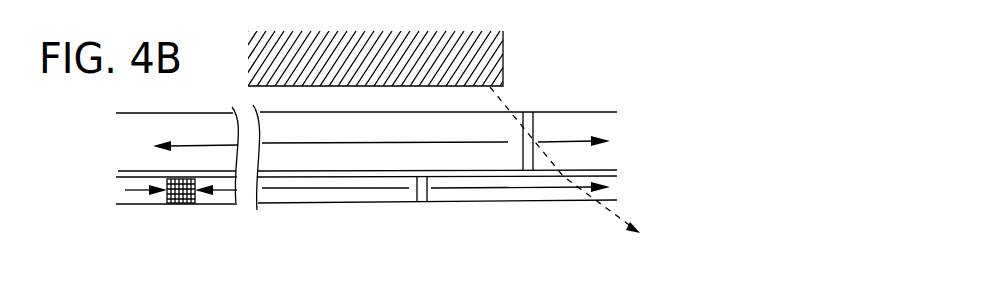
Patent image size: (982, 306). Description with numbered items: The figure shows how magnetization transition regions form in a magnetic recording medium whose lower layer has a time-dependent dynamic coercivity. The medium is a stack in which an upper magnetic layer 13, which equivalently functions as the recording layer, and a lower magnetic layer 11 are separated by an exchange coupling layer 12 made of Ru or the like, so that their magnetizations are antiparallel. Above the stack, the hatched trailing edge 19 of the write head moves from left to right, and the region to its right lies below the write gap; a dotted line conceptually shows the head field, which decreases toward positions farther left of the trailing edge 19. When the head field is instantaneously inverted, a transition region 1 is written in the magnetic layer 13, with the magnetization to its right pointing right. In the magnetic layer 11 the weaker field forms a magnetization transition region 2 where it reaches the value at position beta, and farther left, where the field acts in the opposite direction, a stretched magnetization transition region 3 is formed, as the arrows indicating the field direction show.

The trailing edge 19 is at (516, 47).
The magnetic layer 13 is at (122, 150).
The exchange coupling layer 12 is at (118, 173).
The magnetic layer 11 is at (120, 196).
The transition region 1 is at (531, 112).
The magnetization transition region 2 is at (420, 203).
The magnetization transition region 3 is at (184, 204).